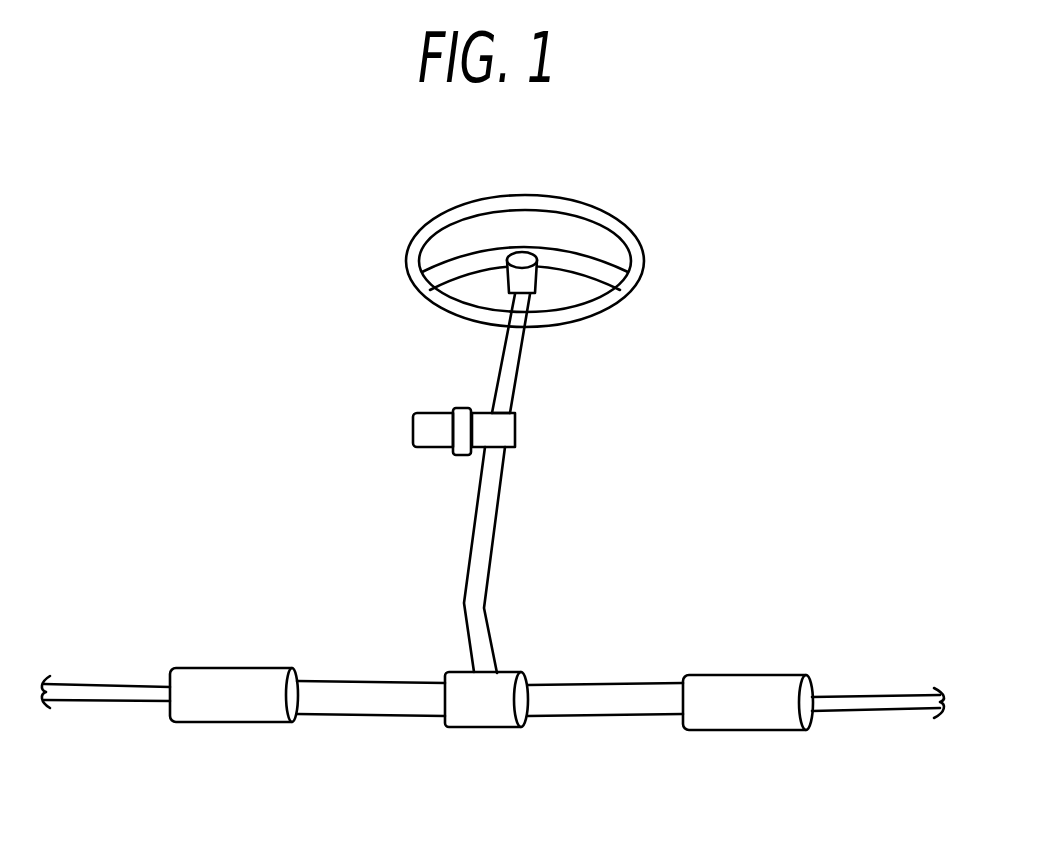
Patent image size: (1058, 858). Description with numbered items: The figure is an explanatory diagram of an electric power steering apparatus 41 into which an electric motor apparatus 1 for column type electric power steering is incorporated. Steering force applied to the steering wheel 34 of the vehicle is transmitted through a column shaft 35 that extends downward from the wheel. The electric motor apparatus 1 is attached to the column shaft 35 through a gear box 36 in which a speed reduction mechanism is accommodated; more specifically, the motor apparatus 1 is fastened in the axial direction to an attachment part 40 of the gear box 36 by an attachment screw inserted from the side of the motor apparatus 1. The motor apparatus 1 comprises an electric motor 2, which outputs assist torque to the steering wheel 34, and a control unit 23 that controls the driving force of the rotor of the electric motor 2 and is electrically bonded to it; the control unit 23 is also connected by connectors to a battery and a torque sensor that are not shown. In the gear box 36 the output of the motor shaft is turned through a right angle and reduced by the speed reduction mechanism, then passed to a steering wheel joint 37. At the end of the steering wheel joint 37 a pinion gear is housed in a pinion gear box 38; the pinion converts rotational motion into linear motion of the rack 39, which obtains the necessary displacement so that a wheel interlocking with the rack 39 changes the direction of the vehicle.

The electric motor apparatus 1 is at (389, 439).
The electric motor 2 is at (432, 423).
The control unit 23 is at (458, 457).
The steering wheel 34 is at (633, 229).
The column shaft 35 is at (522, 350).
The gear box 36 is at (507, 434).
The steering wheel joint 37 is at (500, 512).
The pinion gear box 38 is at (483, 710).
The rack 39 is at (343, 703).
The attachment part 40 is at (486, 422).
The electric power steering apparatus 41 is at (493, 506).